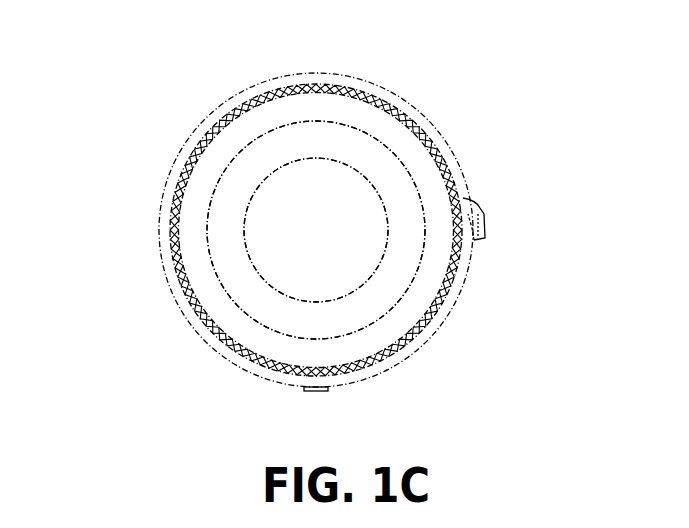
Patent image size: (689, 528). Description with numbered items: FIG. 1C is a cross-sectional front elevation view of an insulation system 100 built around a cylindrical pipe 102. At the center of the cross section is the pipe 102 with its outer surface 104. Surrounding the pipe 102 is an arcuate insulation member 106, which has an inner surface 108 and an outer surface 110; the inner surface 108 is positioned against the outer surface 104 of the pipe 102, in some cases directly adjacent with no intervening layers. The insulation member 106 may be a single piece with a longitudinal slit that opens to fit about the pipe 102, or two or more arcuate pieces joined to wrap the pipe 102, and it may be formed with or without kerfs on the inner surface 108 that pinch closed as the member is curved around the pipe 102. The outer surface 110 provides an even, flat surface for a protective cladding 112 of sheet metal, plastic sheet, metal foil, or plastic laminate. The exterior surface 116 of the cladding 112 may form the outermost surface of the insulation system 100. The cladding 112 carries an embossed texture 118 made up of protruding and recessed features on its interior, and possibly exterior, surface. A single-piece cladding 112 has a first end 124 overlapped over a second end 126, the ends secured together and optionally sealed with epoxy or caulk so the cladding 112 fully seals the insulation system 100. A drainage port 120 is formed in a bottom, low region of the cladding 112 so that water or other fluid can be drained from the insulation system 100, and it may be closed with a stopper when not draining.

The insulation system 100 is at (97, 45).
The cylindrical pipe 102 is at (402, 255).
The outer surface 104 is at (418, 187).
The arcuate insulation member 106 is at (230, 265).
The inner surface 108 is at (243, 228).
The outer surface 110 is at (238, 307).
The protective cladding 112 is at (360, 95).
The exterior surface 116 is at (243, 92).
The embossed texture 118 is at (373, 368).
The drainage port 120 is at (320, 392).
The first end 124 is at (486, 221).
The second end 126 is at (477, 238).